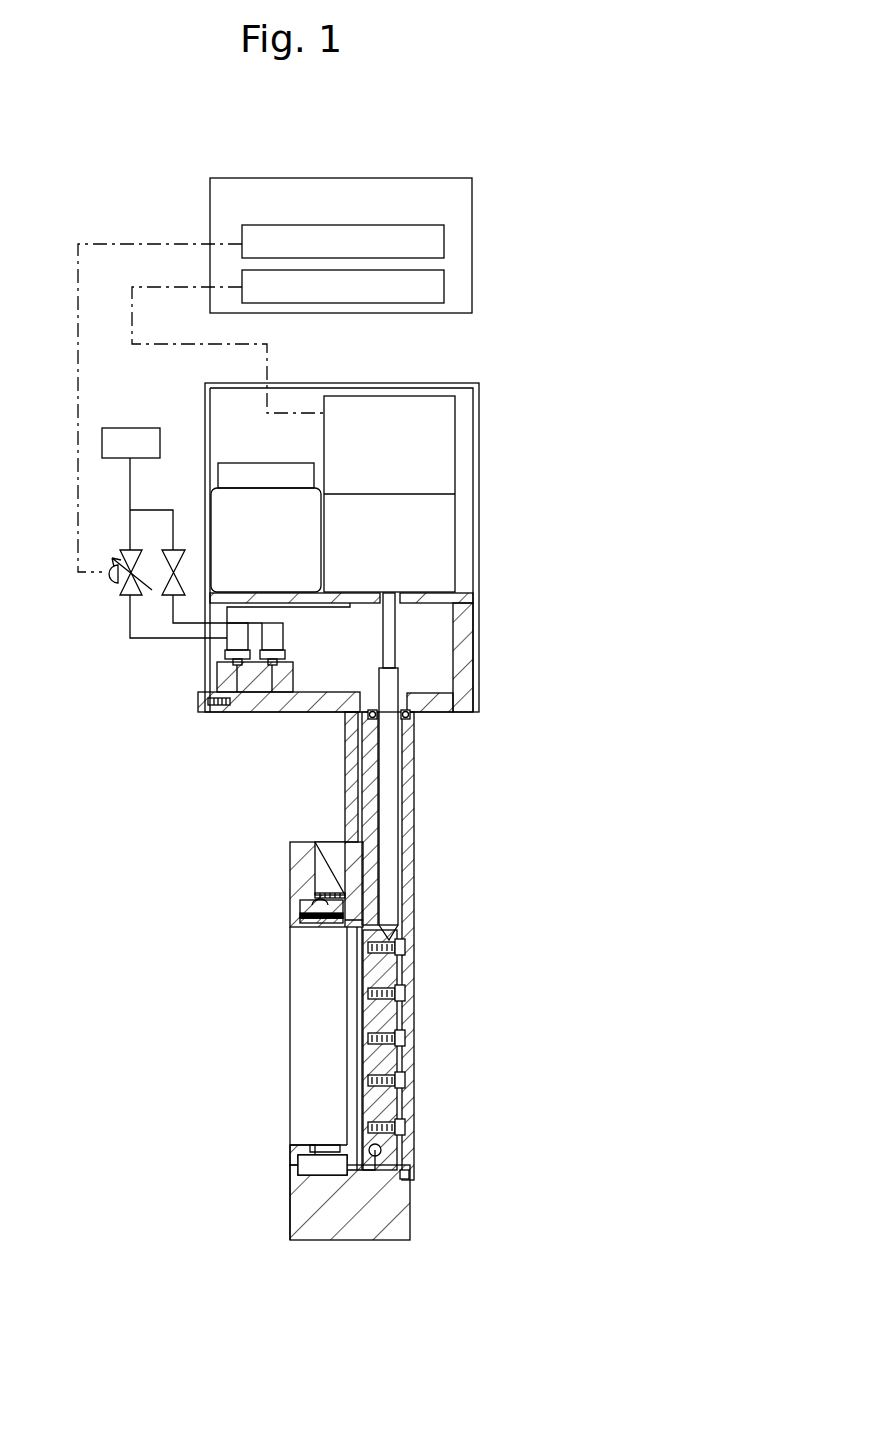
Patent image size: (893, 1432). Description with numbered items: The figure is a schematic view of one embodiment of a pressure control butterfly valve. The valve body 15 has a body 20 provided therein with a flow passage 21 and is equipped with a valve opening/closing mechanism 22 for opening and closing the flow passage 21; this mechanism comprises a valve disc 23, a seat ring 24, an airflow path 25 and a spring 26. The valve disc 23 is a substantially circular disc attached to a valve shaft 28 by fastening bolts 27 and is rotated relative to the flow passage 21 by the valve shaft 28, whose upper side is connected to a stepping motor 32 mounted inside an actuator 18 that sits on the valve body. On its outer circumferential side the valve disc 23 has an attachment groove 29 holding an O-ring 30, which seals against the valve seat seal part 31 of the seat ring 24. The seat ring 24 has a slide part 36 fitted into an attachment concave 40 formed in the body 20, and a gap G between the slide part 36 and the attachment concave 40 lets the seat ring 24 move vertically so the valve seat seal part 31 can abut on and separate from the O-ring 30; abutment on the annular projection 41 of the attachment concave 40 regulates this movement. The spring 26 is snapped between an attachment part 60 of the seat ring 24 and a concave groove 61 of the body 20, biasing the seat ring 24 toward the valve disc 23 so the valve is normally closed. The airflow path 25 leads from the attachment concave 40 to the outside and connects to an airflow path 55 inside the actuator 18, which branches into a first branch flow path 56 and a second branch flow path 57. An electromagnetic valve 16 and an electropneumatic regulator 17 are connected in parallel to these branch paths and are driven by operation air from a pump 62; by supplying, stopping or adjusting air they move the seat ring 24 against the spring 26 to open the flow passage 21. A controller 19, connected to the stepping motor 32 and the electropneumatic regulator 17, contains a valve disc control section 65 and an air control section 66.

The controller 19 is at (347, 193).
The air control section 66 is at (428, 240).
The valve disc control section 65 is at (440, 287).
The pump 62 is at (138, 437).
The electromagnetic valve 16 is at (176, 550).
The electropneumatic regulator 17 is at (115, 591).
The actuator 18 is at (478, 520).
The stepping motor 32 is at (423, 437).
The second branch flow path 57 is at (236, 706).
The first branch flow path 56 is at (271, 706).
The airflow path of the actuator 55 is at (330, 706).
The airflow path 25 is at (318, 850).
The valve shaft 28 is at (390, 740).
The valve seat seal part 31 is at (382, 937).
The valve opening/closing mechanism 22 is at (432, 955).
The valve body 15 is at (432, 881).
The slide part 36 is at (330, 893).
The concave groove 61 is at (310, 912).
The attachment part 60 is at (330, 921).
The seat ring 24 is at (350, 930).
The valve disc 23 is at (367, 1050).
The attachment groove 29 is at (394, 947).
The fastening bolts 27 is at (402, 1081).
The O-ring 30 is at (390, 1140).
The annular projection 41 is at (410, 1180).
The flow passage 21 is at (295, 1148).
The gap G is at (325, 1147).
The spring 26 is at (300, 1173).
The body 20 is at (400, 1212).
The attachment concave 40 is at (348, 1185).